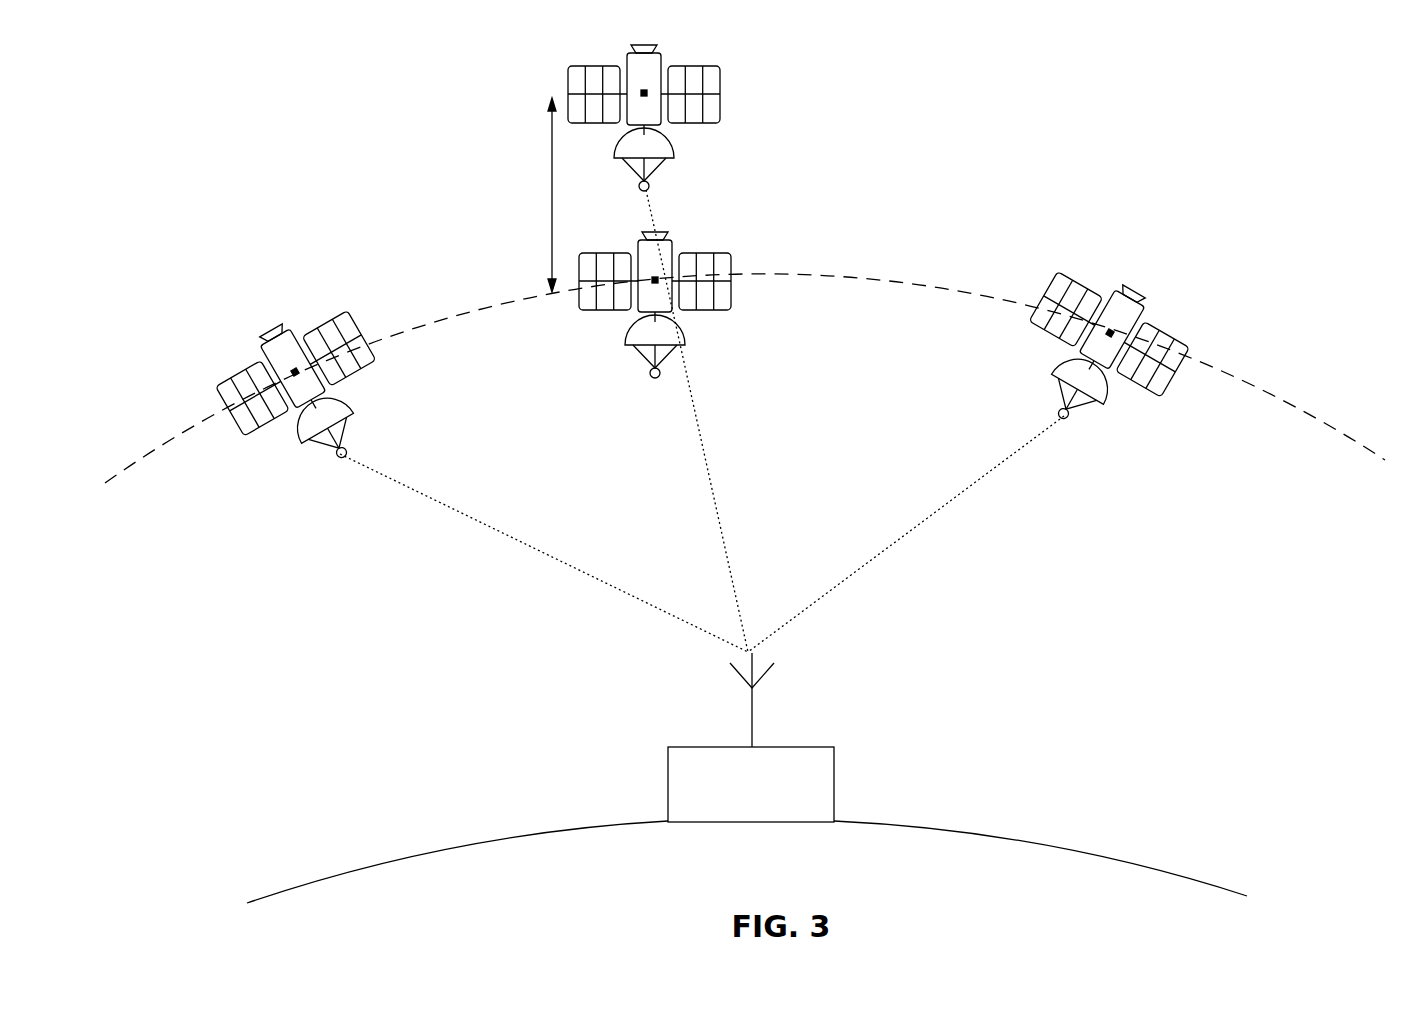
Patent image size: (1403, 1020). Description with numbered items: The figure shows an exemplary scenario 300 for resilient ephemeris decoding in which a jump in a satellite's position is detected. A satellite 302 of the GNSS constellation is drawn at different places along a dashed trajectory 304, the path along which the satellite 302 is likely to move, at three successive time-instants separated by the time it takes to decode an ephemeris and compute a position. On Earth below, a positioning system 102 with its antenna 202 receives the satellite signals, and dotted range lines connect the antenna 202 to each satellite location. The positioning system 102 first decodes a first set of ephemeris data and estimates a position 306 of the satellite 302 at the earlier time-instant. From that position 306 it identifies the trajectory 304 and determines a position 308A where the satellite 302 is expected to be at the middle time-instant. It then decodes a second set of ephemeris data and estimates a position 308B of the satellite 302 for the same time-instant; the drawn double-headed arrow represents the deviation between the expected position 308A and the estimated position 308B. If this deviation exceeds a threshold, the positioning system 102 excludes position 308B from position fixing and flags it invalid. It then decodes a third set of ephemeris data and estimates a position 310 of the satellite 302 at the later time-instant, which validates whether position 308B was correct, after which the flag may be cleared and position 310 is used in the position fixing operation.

The exemplary scenario 300 is at (128, 86).
The satellite 302 is at (721, 96).
The trajectory 304 is at (186, 425).
The position 306 is at (292, 370).
The position 308A is at (653, 278).
The position 308B is at (641, 92).
The position 310 is at (1112, 335).
The antenna 202 is at (750, 718).
The positioning system 102 is at (751, 784).